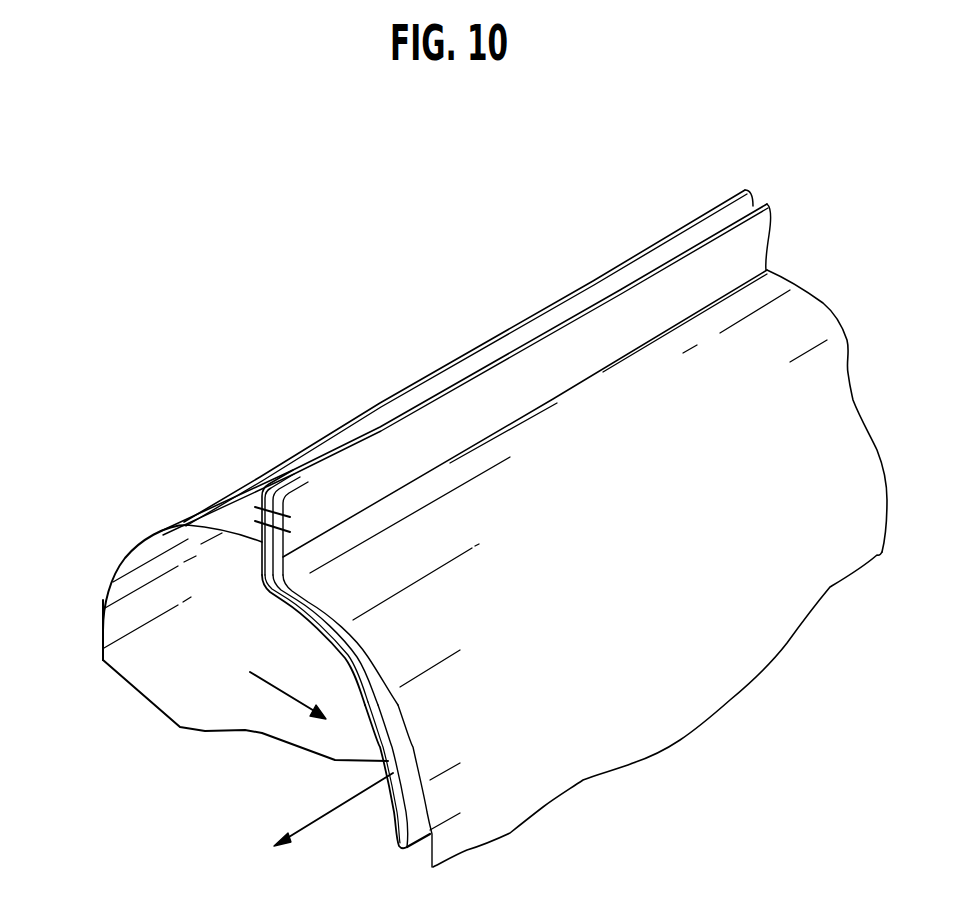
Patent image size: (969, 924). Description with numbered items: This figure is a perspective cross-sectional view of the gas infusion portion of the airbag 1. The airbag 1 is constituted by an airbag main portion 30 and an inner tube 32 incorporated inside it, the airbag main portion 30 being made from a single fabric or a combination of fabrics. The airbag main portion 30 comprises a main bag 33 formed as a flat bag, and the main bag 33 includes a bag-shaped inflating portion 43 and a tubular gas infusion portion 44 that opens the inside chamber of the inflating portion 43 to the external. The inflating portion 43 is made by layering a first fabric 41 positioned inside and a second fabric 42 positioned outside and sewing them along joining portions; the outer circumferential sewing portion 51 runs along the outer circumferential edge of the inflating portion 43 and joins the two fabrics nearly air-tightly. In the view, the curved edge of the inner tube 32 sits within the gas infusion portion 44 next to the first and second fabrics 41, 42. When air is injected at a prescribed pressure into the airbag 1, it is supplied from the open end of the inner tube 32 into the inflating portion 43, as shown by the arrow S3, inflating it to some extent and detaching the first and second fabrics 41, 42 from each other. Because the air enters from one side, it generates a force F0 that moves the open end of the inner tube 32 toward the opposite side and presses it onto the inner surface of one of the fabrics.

The airbag 1 is at (232, 267).
The airbag main portion 30 is at (212, 502).
The inner tube 32 is at (393, 810).
The main bag 33 is at (121, 567).
The first fabric 41 is at (533, 797).
The second fabric 42 is at (103, 633).
The inflating portion 43 is at (138, 696).
The gas infusion portion 44 is at (823, 303).
The outer circumferential sewing portion 51 is at (291, 522).
The force F0 is at (269, 682).
The arrow S3 is at (313, 824).